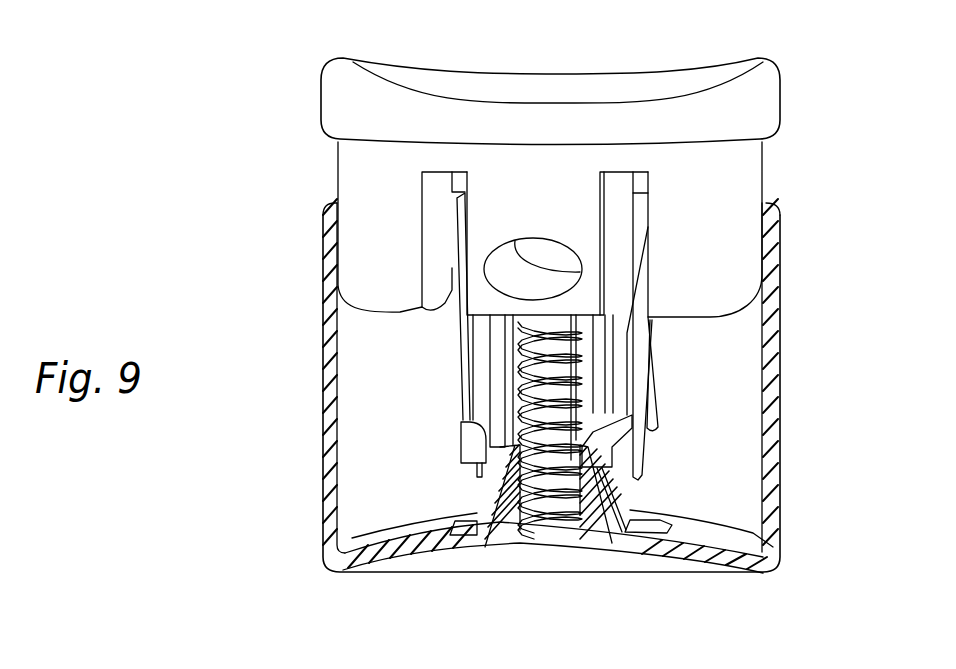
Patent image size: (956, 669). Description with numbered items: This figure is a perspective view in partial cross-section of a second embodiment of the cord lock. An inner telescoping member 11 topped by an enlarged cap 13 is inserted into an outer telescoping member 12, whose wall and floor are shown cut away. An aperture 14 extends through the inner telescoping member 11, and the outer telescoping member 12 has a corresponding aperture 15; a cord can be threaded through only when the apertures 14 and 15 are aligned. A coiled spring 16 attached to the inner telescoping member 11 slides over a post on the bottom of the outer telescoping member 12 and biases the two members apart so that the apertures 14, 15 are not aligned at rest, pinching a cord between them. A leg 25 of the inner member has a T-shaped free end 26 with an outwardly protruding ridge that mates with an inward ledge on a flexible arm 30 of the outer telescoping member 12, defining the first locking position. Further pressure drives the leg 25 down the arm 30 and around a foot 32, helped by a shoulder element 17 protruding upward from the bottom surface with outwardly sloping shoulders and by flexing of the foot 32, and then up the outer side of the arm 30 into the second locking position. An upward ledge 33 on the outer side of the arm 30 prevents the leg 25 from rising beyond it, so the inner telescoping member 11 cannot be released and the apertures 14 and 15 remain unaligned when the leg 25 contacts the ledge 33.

The inner telescoping member 11 is at (753, 183).
The outer telescoping member 12 is at (773, 310).
The enlarged cap 13 is at (615, 80).
The aperture 14 is at (520, 262).
The aperture 15 is at (520, 262).
The coiled spring 16 is at (565, 533).
The shoulder element 17 is at (613, 533).
The leg 25 is at (482, 343).
The T-shaped free end 26 is at (461, 463).
The flexible arm 30 is at (470, 368).
The foot 32 is at (513, 440).
The upward ledge 33 is at (633, 405).